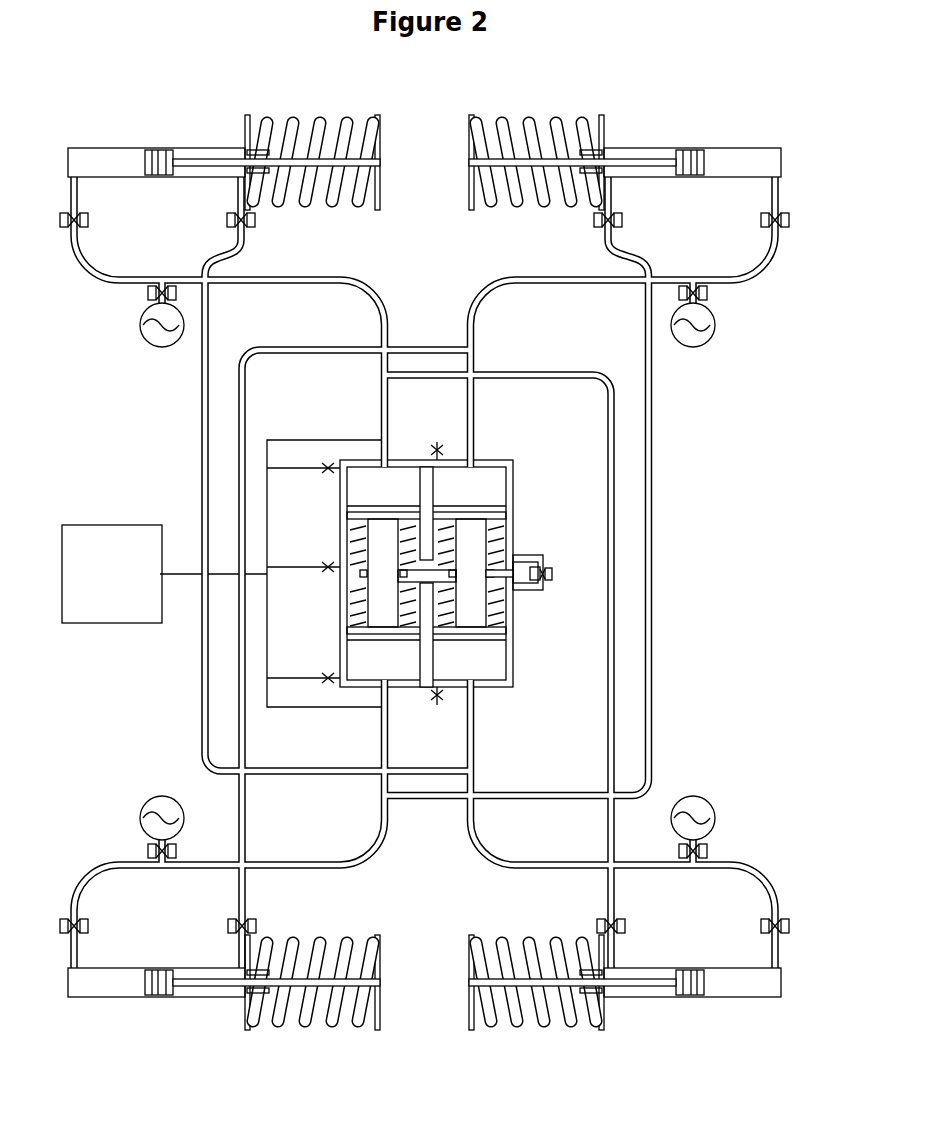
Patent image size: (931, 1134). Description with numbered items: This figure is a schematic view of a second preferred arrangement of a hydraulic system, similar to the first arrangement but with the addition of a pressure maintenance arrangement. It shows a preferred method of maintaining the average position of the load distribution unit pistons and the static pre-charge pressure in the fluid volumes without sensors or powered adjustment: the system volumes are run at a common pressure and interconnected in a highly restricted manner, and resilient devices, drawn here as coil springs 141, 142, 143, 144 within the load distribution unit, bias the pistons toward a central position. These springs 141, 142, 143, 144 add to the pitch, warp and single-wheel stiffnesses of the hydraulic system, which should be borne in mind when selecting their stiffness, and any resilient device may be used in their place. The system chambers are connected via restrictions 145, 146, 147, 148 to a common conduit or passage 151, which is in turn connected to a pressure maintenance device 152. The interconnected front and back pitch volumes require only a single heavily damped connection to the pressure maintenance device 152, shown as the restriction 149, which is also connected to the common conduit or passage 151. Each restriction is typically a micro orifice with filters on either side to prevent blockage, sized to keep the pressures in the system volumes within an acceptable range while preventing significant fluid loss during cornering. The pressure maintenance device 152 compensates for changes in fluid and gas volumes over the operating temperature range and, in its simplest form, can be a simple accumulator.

The first spring 141 is at (357, 540).
The second spring 142 is at (492, 546).
The third spring 143 is at (495, 606).
The fourth spring 144 is at (357, 610).
The restriction 145 is at (328, 474).
The restriction 146 is at (437, 446).
The restriction 147 is at (437, 699).
The restriction 148 is at (328, 677).
The restriction 149 is at (328, 569).
The common conduit or passage 151 is at (183, 571).
The pressure maintenance device 152 is at (102, 613).